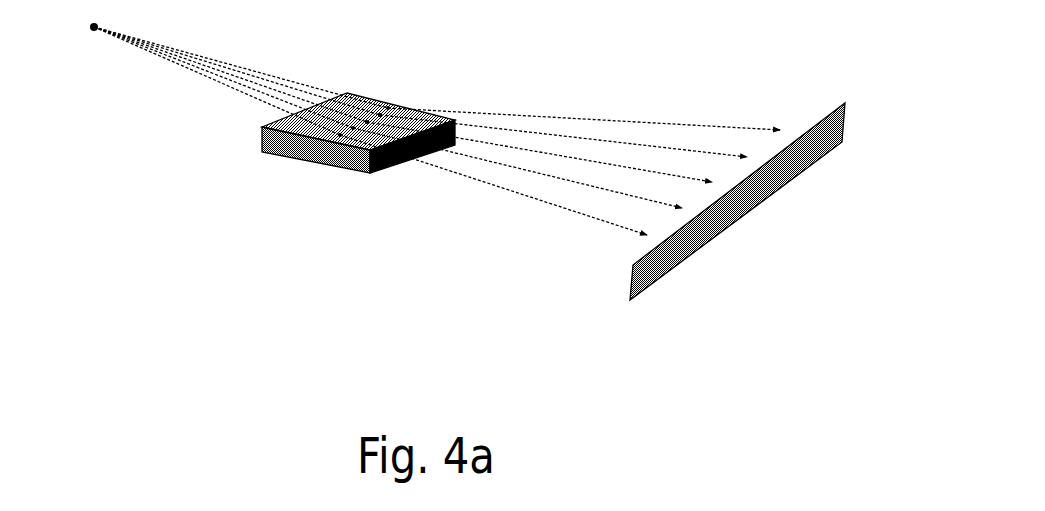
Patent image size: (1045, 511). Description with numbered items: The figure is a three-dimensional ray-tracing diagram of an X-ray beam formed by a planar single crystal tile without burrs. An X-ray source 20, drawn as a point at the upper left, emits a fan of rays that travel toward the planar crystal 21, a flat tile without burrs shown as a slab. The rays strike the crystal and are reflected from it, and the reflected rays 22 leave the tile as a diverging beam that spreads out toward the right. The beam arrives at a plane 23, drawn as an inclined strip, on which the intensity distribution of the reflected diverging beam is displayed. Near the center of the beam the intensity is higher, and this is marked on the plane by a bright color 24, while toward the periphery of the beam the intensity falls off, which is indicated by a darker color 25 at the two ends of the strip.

The X-ray source 20 is at (90, 29).
The planar crystal 21 is at (297, 148).
The reflected rays 22 is at (415, 160).
The plane 23 is at (843, 123).
The bright color 24 is at (735, 203).
The darker color 25 is at (650, 272).